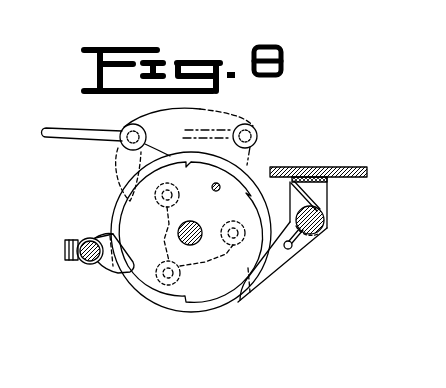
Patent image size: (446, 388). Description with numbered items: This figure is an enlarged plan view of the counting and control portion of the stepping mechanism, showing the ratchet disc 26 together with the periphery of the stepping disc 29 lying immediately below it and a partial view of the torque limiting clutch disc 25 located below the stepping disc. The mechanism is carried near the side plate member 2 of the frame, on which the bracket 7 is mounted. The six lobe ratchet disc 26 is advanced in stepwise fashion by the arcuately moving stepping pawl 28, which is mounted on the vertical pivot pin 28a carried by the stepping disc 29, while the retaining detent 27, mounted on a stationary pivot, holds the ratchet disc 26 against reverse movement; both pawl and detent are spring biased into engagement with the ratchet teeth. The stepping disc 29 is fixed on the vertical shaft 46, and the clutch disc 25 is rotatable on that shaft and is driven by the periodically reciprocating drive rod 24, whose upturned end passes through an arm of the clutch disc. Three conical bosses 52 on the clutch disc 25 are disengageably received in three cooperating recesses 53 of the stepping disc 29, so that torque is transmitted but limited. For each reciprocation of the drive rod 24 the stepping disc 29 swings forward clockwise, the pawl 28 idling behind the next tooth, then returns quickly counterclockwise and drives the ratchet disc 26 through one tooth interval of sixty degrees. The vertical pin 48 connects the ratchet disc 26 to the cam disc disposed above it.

The side plate member 2 is at (349, 170).
The bracket 7 is at (330, 199).
The drive rod 24 is at (68, 140).
The clutch disc 25 is at (152, 126).
The ratchet disc 26 is at (182, 291).
The retaining detent 27 is at (285, 266).
The stepping pawl 28 is at (112, 168).
The pivot pin 28a is at (84, 238).
The stepping disc 29 is at (110, 237).
The vertical shaft 46 is at (204, 226).
The vertical pin 48 is at (214, 190).
The conical bosses 52 is at (166, 228).
The recesses 53 is at (178, 190).